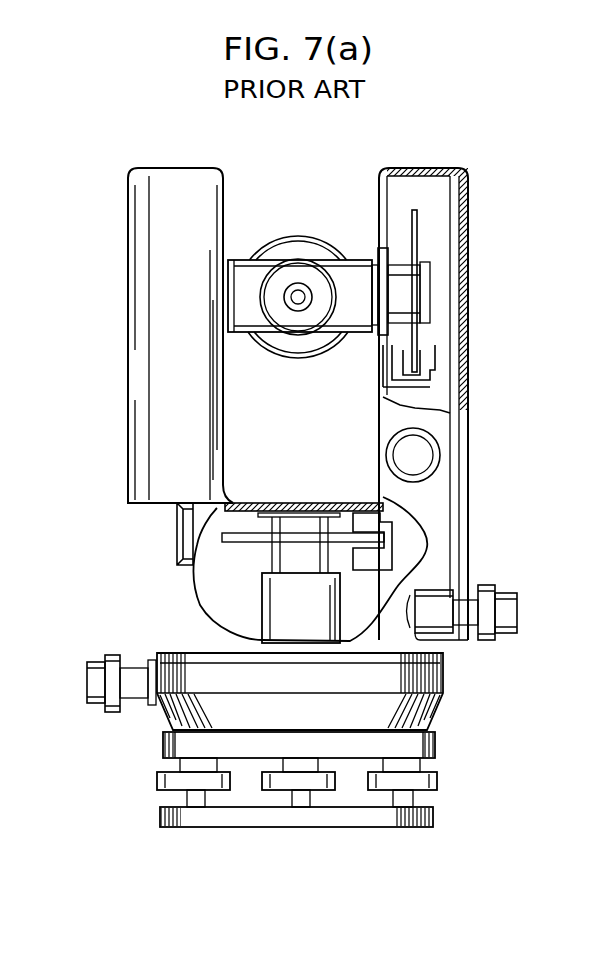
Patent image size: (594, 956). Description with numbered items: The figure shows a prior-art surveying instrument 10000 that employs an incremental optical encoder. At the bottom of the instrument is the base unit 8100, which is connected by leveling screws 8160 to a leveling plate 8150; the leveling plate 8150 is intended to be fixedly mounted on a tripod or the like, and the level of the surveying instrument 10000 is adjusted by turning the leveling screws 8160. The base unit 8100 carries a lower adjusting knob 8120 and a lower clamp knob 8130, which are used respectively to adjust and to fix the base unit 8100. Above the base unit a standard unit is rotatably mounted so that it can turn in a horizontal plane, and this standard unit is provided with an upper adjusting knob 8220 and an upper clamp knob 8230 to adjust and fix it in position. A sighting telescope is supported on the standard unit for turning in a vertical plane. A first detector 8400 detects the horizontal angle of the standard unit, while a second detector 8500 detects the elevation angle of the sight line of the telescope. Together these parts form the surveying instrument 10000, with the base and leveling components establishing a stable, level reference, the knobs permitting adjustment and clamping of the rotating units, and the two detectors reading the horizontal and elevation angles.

The surveying instrument 10000 is at (552, 851).
The second detector 8500 is at (437, 385).
The first detector 8400 is at (405, 545).
The upper clamp knob 8230 is at (487, 583).
The upper adjusting knob 8220 is at (510, 633).
The lower clamp knob 8130 is at (117, 653).
The lower adjusting knob 8120 is at (93, 707).
The base unit 8100 is at (437, 710).
The leveling screws 8160 is at (158, 780).
The leveling plate 8150 is at (340, 815).